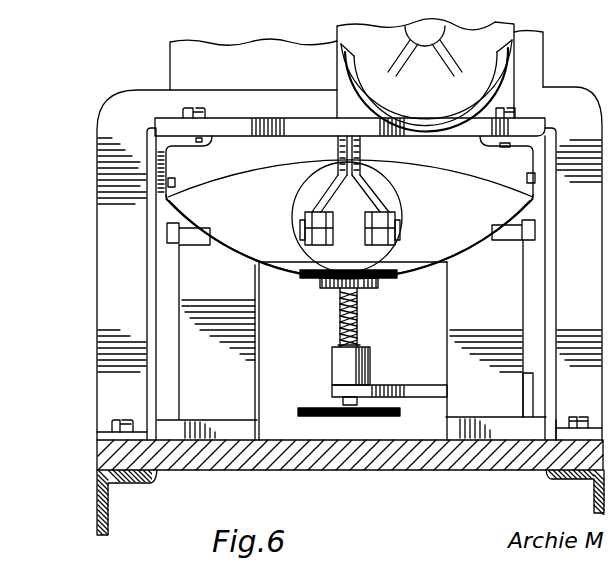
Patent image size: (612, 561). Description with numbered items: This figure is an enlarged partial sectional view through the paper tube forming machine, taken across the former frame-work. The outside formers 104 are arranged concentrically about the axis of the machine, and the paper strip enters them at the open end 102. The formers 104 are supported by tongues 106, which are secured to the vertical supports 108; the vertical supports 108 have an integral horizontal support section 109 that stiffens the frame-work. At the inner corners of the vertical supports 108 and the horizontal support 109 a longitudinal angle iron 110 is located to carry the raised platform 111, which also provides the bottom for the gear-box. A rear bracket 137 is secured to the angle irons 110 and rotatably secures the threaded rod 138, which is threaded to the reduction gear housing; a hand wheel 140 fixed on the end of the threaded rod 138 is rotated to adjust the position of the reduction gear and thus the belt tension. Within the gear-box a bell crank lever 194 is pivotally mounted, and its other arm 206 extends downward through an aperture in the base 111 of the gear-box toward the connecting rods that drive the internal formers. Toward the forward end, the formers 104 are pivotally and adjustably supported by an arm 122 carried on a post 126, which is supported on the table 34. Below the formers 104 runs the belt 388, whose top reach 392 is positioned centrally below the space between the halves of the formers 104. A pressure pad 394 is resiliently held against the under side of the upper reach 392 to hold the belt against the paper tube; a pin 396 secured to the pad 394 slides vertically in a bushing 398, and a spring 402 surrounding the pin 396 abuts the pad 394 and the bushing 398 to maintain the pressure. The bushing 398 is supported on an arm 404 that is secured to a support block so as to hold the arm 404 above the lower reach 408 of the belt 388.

The table 34 is at (452, 452).
The open end 102 is at (233, 236).
The outside formers 104 is at (272, 272).
The tongues 106 is at (172, 196).
The vertical supports 108 is at (97, 275).
The horizontal support section 109 is at (170, 103).
The longitudinal angle iron 110 is at (207, 143).
The raised platform 111 is at (425, 136).
The arm 122 is at (167, 228).
The post 126 is at (520, 304).
The rear bracket 137 is at (347, 86).
The threaded rod 138 is at (425, 36).
The hand wheel 140 is at (500, 58).
The bell crank lever 194 is at (328, 151).
The arm 206 is at (366, 180).
The belt 388 is at (312, 406).
The top reach 392 is at (368, 290).
The pressure pad 394 is at (330, 290).
The pin 396 is at (338, 340).
The bushing 398 is at (340, 366).
The spring 402 is at (360, 340).
The arm 404 is at (389, 377).
The lower reach 408 is at (398, 414).